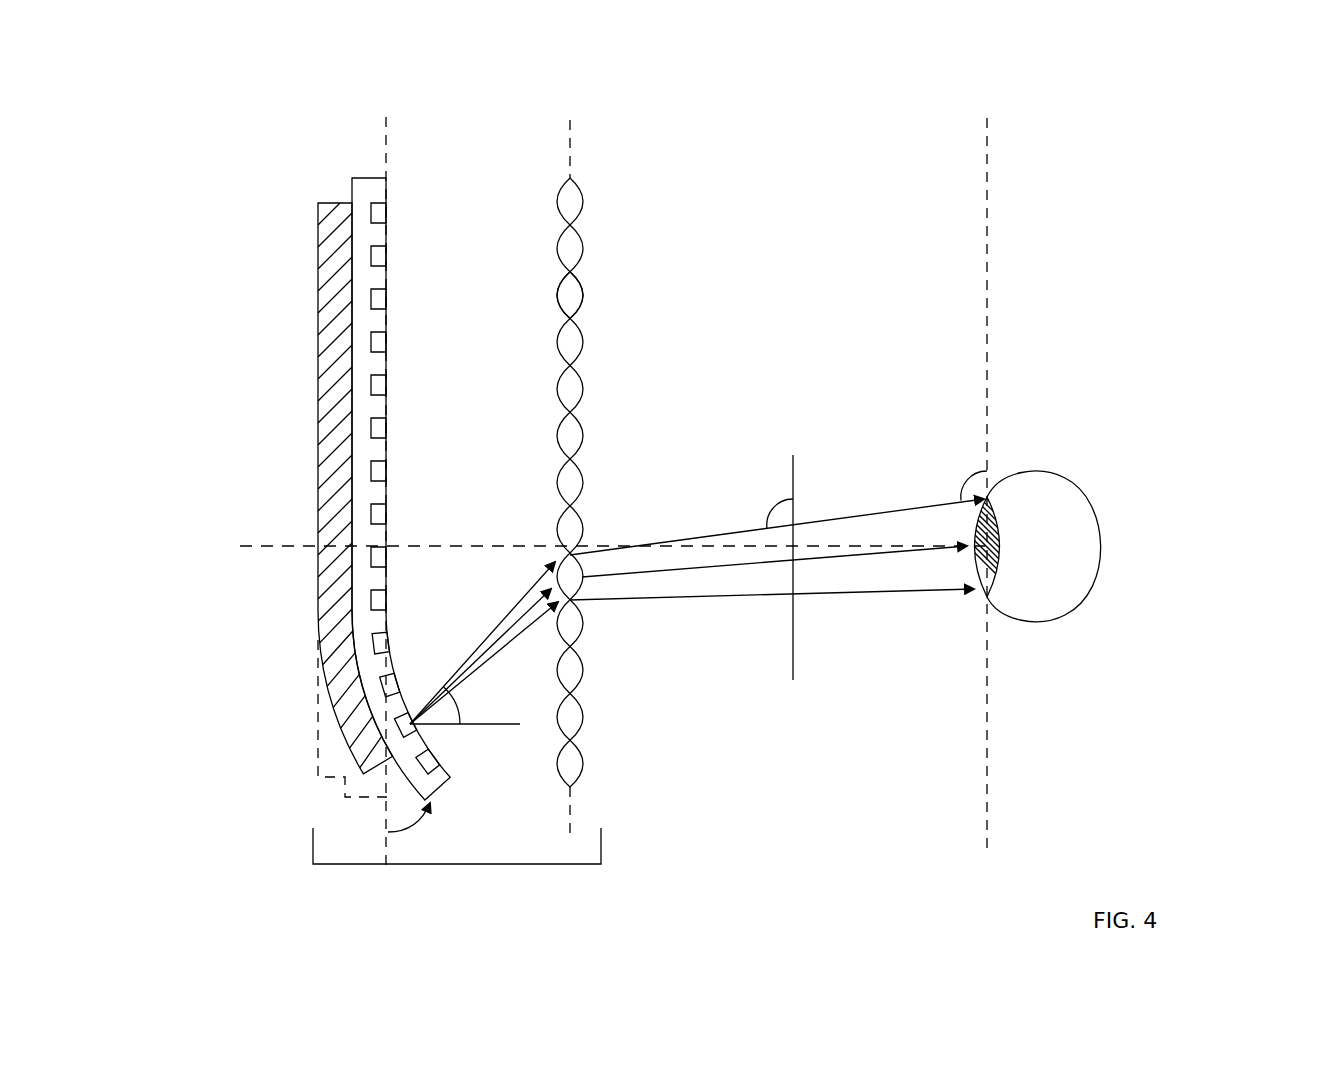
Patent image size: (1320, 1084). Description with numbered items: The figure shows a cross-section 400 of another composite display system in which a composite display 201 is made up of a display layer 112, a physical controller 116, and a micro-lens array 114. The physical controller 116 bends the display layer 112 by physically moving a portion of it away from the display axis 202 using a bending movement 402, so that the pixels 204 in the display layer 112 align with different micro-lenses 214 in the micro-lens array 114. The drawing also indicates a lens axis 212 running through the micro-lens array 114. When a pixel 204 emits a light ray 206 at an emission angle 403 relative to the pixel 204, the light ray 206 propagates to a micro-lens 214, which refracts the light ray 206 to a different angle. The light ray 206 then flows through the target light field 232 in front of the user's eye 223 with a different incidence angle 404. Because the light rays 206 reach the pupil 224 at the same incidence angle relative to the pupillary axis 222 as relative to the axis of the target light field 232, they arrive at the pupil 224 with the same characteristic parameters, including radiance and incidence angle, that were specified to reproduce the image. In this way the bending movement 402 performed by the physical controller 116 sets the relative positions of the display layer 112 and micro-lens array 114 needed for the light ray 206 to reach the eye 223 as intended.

The cross-section 400 is at (1164, 116).
The composite display 201 is at (462, 866).
The physical controller 116 is at (318, 215).
The display layer 112 is at (365, 178).
The display axis 202 is at (385, 134).
The pixel 204 is at (388, 244).
The bending movement 402 is at (424, 826).
The emission angle 403 is at (458, 698).
The light ray 206 is at (512, 613).
The micro-lens array 114 is at (570, 178).
The micro-lens 214 is at (584, 297).
The lens axis 212 is at (570, 130).
The incidence angle 404 is at (767, 527).
The target light field 232 is at (795, 479).
The pupillary axis 222 is at (987, 158).
The eye 223 is at (1060, 478).
The pupil 224 is at (993, 588).